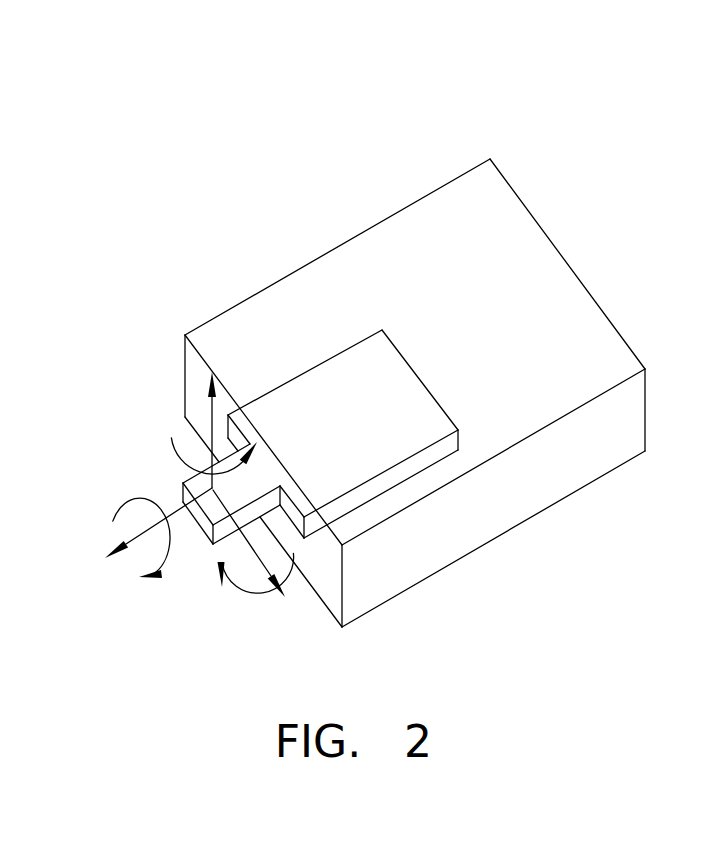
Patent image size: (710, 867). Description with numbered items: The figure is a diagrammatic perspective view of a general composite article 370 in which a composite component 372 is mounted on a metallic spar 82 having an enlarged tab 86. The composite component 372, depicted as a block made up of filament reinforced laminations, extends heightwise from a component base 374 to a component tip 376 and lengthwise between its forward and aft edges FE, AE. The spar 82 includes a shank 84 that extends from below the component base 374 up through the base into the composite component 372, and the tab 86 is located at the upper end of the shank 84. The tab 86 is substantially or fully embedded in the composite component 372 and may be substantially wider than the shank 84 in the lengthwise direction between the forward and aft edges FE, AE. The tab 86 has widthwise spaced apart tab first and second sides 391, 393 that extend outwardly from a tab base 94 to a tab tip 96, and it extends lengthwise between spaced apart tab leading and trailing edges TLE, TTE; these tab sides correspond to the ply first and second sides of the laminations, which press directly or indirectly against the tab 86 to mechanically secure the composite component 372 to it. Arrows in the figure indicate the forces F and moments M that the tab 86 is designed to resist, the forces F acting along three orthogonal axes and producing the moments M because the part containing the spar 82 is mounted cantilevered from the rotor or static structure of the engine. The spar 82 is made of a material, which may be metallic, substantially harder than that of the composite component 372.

The composite article 370 is at (397, 418).
The composite component 372 is at (428, 192).
The component base 374 is at (326, 585).
The component tip 376 is at (598, 305).
The tab first side 391 is at (532, 247).
The tab second side 393 is at (505, 532).
The shank 84 is at (183, 482).
The tab 86 is at (372, 374).
The tab tip 96 is at (421, 380).
The tab base 94 is at (287, 500).
The spar 82 is at (313, 523).
The forward edge FE is at (325, 253).
The aft edge AE is at (597, 445).
The tab leading edge TLE is at (302, 372).
The tab trailing edge TTE is at (432, 456).
The forces F is at (190, 481).
The moments M is at (203, 521).